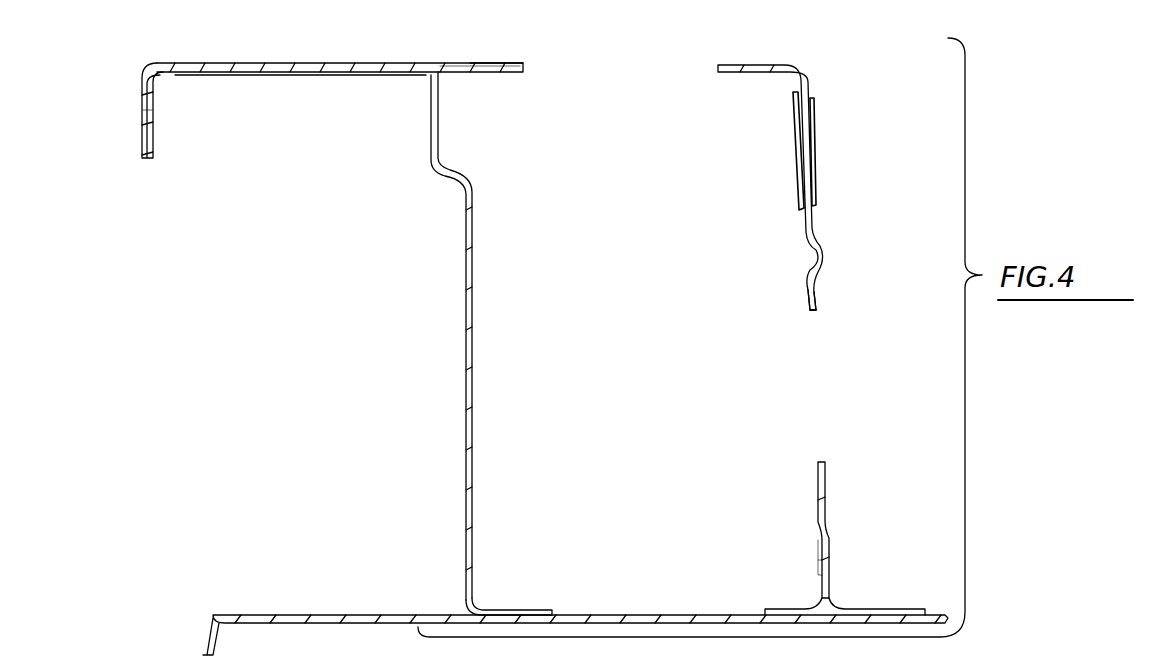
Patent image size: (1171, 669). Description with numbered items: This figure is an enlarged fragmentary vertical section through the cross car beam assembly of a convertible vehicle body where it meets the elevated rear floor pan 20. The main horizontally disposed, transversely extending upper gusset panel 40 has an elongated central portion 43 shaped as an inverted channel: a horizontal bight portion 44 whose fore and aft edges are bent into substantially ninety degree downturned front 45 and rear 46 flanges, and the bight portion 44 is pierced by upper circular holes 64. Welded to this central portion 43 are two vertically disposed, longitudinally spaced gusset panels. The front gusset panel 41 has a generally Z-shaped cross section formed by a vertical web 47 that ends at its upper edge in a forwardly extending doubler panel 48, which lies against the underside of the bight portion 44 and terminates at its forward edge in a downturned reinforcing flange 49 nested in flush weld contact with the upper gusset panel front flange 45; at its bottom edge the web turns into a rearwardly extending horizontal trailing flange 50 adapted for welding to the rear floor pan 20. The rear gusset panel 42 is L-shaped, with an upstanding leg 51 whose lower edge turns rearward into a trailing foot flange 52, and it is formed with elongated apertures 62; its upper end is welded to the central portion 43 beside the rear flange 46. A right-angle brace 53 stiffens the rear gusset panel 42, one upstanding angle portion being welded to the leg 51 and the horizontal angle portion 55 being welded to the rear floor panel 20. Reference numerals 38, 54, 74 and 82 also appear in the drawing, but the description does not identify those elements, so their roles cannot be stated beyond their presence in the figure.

The rear floor pan 20 is at (324, 614).
The member 38 is at (115, 657).
The upper gusset panel 40 is at (748, 64).
The front gusset panel 41 is at (472, 447).
The rear gusset panel 42 is at (828, 475).
The central portion 43 is at (413, 66).
The bight portion 44 is at (270, 63).
The front flange 45 is at (142, 130).
The rear flange 46 is at (815, 157).
The vertical web 47 is at (476, 388).
The doubler panel 48 is at (298, 74).
The reinforcing flange 49 is at (156, 128).
The trailing flange 50 is at (530, 610).
The upstanding leg 51 is at (832, 500).
The trailing foot flange 52 is at (878, 607).
The right-angle brace 53 is at (812, 549).
The joint 54 is at (818, 563).
The horizontal angle portion 55 is at (783, 582).
The elongated apertures 62 is at (813, 315).
The upper circular holes 64 is at (528, 68).
The member 74 is at (61, 659).
The member 82 is at (1084, 659).